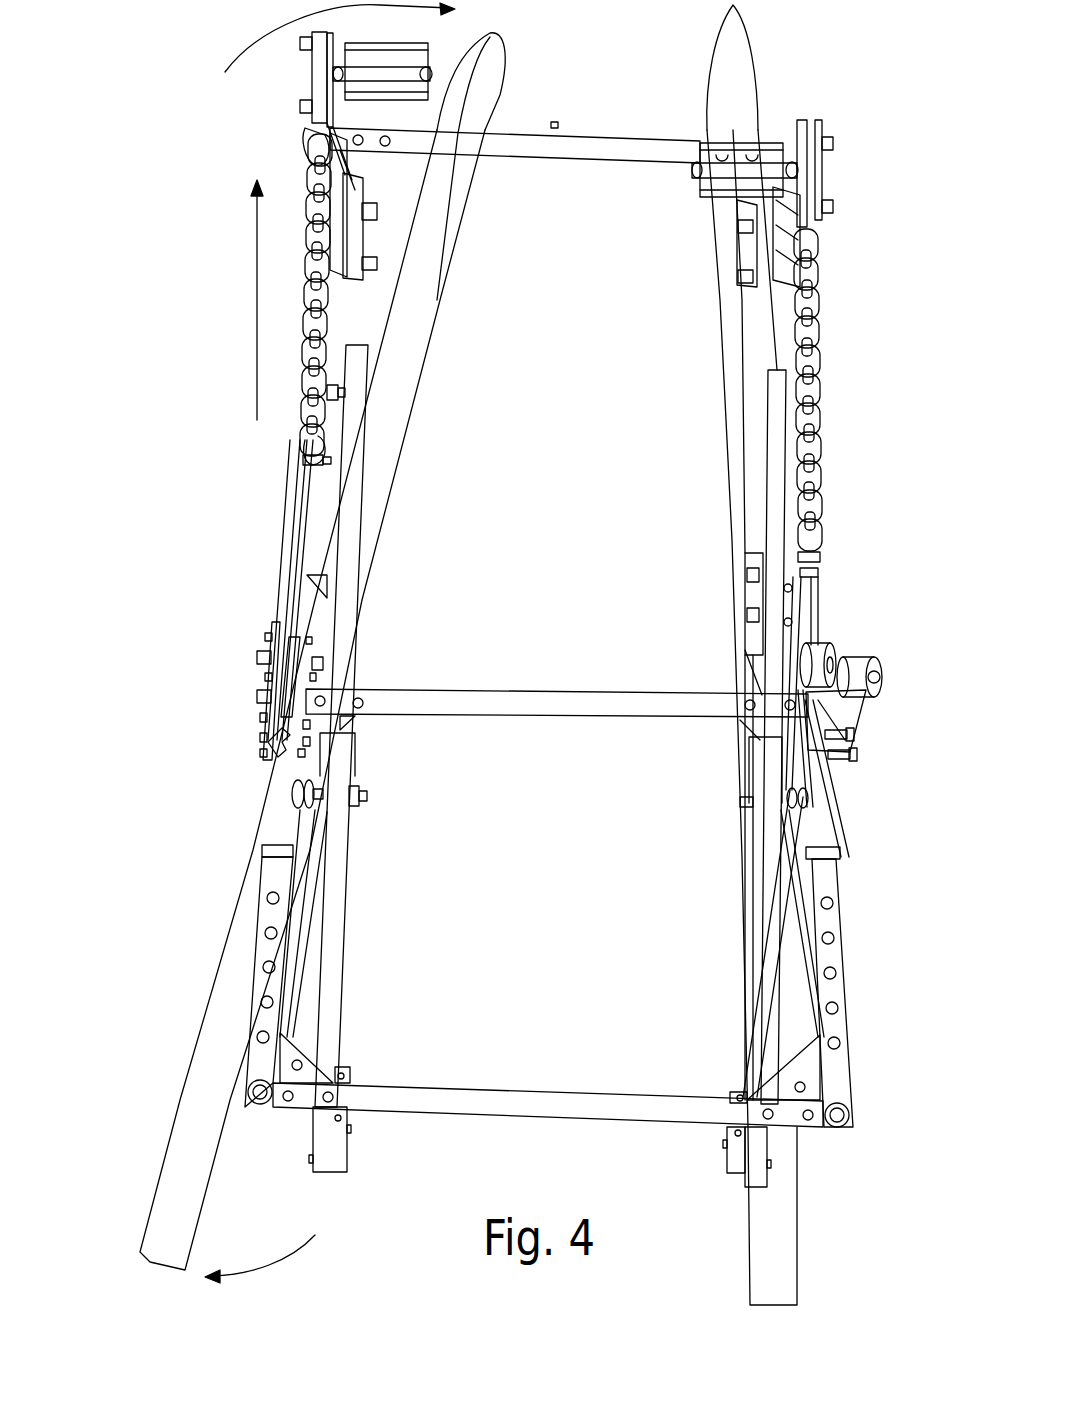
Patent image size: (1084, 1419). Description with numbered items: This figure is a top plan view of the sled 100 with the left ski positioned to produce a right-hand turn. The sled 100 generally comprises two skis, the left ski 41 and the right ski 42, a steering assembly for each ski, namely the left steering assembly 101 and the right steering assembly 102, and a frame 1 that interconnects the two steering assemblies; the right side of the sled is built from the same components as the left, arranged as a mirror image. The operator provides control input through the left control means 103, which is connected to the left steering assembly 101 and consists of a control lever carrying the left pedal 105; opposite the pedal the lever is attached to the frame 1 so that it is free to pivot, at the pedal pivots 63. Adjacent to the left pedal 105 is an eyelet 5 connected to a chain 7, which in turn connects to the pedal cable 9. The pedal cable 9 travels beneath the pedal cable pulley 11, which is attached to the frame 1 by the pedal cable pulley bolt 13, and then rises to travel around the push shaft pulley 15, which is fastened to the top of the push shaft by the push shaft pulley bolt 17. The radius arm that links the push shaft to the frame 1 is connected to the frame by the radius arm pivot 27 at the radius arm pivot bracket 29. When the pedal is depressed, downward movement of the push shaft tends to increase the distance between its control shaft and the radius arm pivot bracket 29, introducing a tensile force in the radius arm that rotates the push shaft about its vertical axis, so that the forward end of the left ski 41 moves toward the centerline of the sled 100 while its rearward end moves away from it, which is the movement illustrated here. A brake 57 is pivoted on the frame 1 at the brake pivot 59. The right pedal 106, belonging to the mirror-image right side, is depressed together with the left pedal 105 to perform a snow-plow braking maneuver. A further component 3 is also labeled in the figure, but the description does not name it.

The frame 1 is at (617, 137).
The roller 3 is at (337, 37).
The eyelet 5 is at (313, 137).
The chain 7 is at (312, 232).
The pedal cable 9 is at (298, 522).
The pedal cable pulley 11 is at (272, 628).
The pedal cable pulley bolt 13 is at (257, 655).
The push shaft pulley 15 is at (258, 722).
The push shaft pulley bolt 17 is at (250, 695).
The radius arm pivot 27 is at (340, 392).
The radius arm pivot bracket 29 is at (328, 362).
The left ski 41 is at (160, 1183).
The right ski 42 is at (798, 1228).
The brake 57 is at (342, 1003).
The brake pivot 59 is at (368, 797).
The pedal pivots 63 is at (378, 212).
The sled 100 is at (588, 80).
The left steering assembly 101 is at (234, 708).
The right steering assembly 102 is at (878, 673).
The left control means 103 is at (300, 90).
The left pedal 105 is at (430, 53).
The right pedal 106 is at (703, 198).